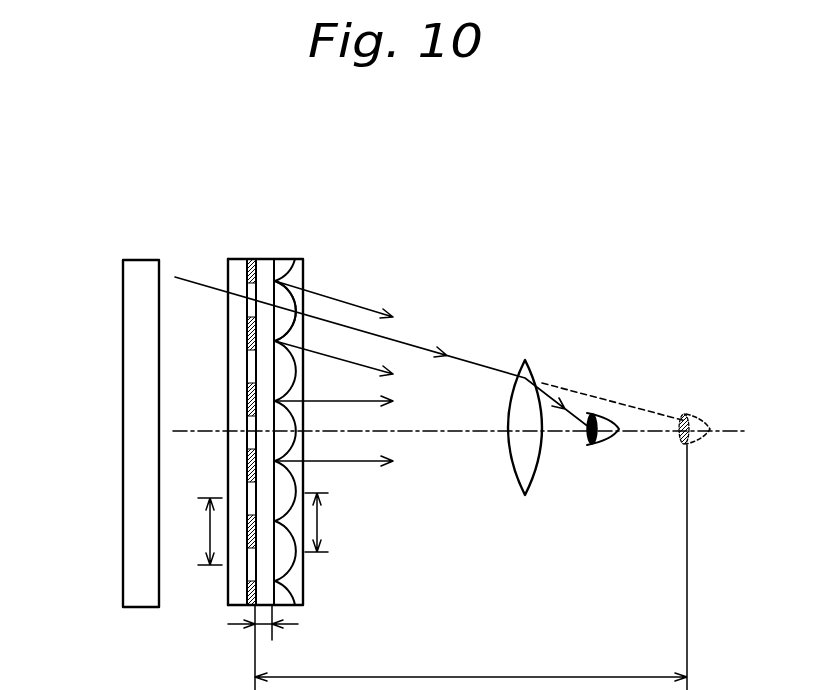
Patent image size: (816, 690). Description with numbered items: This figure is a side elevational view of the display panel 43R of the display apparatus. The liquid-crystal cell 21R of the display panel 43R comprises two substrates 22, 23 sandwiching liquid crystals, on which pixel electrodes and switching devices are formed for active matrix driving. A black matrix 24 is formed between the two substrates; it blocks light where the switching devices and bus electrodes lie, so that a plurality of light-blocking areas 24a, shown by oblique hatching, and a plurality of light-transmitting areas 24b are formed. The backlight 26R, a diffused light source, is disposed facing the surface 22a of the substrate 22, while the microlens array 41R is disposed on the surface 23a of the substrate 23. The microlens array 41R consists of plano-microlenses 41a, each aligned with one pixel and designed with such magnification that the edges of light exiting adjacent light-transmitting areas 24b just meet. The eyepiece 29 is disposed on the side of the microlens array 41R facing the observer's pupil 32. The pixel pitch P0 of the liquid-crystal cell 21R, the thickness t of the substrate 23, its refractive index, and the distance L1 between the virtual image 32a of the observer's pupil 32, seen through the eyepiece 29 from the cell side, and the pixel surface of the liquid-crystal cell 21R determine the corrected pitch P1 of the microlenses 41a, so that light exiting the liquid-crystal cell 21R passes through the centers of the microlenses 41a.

The liquid-crystal cell 21R is at (297, 195).
The substrate 22 is at (238, 263).
The surface of the substrate 22a is at (228, 263).
The substrate 23 is at (267, 263).
The surface of the substrate 23a is at (300, 263).
The black matrix 24 is at (252, 263).
The light-blocking areas 24a is at (247, 333).
The light-transmitting areas 24b is at (247, 366).
The backlight 26R is at (135, 433).
The eyepiece 29 is at (530, 465).
The observer's pupil 32 is at (606, 415).
The virtual image of the observer's pupil 32a is at (691, 412).
The microlens array 41R is at (292, 262).
The microlens 41a is at (308, 301).
The display panel 43R is at (368, 144).
The pixel pitch P0 is at (212, 532).
The pitch of the microlenses P1 is at (317, 521).
The thickness of the substrate t is at (262, 628).
The distance L1 is at (458, 676).